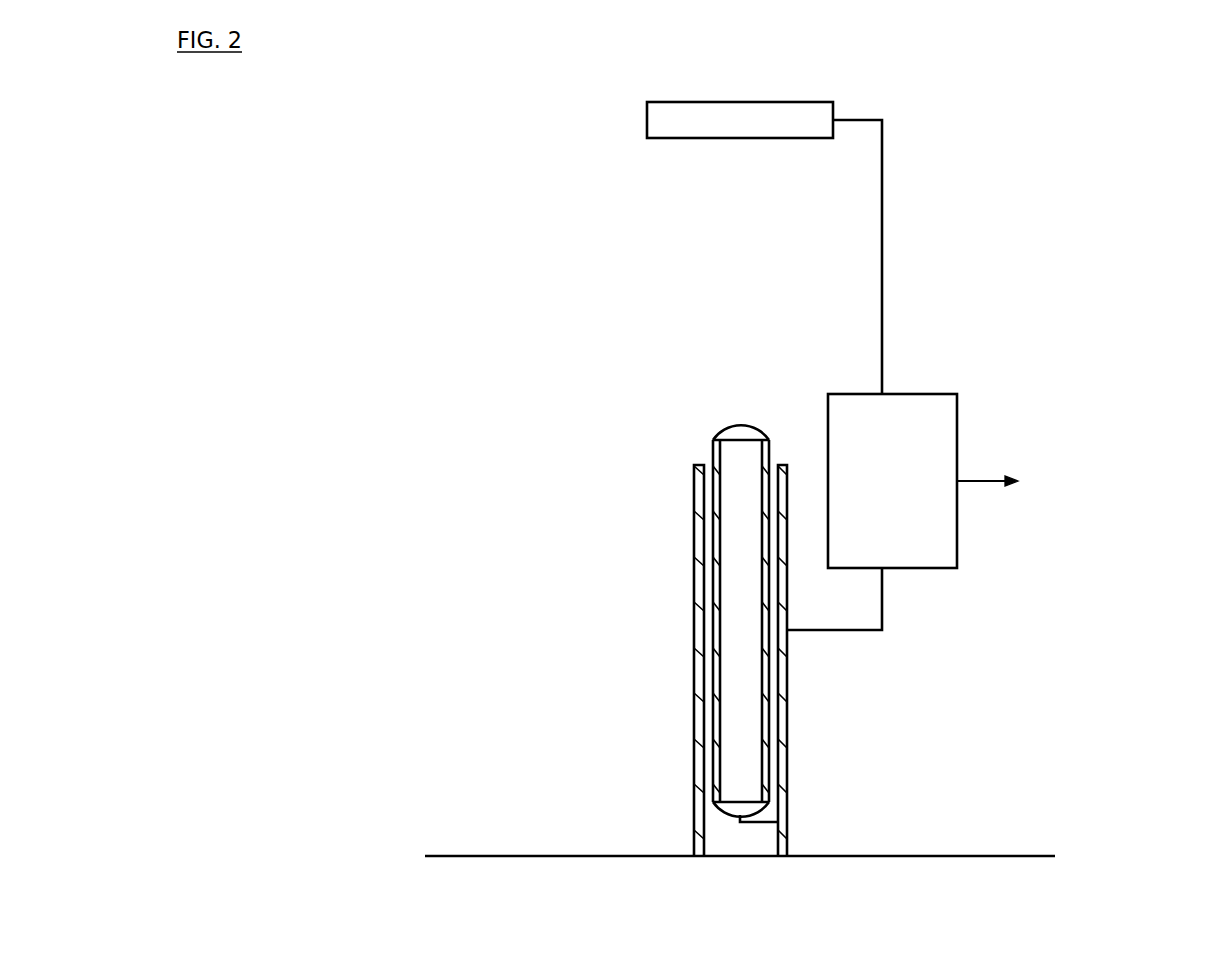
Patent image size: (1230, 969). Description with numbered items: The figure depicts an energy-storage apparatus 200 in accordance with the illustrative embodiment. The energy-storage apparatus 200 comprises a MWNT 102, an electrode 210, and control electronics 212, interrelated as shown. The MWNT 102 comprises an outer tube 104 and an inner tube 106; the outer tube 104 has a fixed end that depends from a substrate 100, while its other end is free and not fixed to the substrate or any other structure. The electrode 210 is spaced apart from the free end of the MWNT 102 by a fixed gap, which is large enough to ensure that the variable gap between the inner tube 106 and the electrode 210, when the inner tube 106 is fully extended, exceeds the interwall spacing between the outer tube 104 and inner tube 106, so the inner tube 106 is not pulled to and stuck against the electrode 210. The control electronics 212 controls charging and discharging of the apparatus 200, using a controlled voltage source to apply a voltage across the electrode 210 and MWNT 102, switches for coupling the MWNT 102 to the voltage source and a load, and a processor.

The substrate 100 is at (823, 906).
The MWNT 102 is at (665, 537).
The outer tube 104 is at (700, 628).
The inner tube 106 is at (727, 695).
The energy-storage apparatus 200 is at (1099, 263).
The electrode 210 is at (817, 134).
The control electronics 212 is at (912, 518).